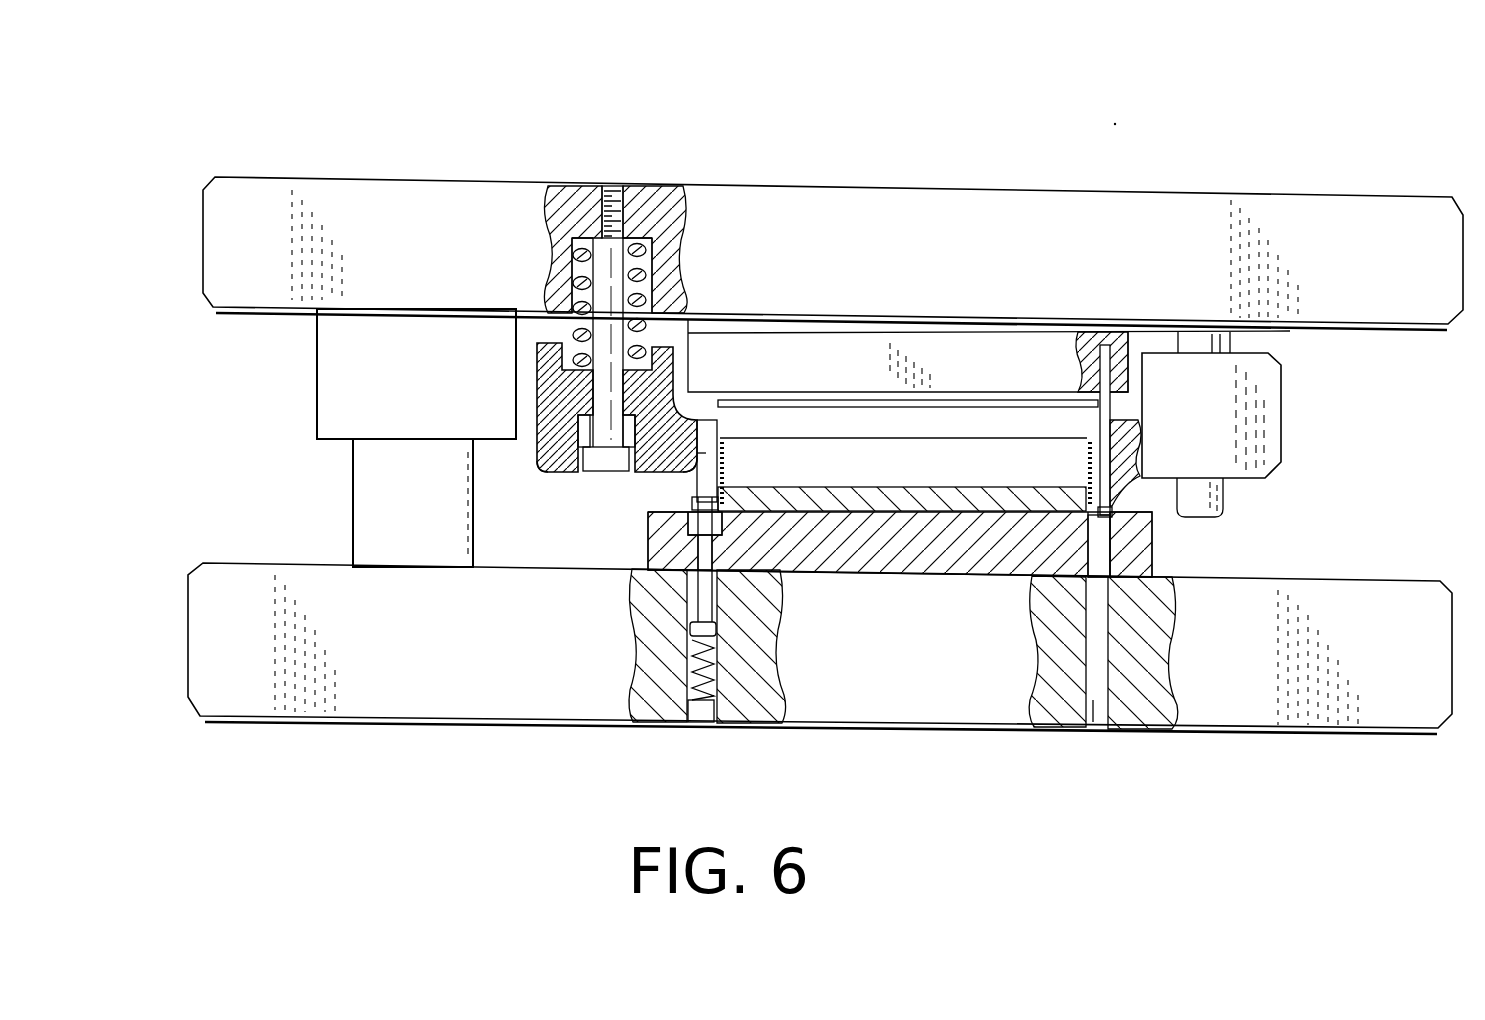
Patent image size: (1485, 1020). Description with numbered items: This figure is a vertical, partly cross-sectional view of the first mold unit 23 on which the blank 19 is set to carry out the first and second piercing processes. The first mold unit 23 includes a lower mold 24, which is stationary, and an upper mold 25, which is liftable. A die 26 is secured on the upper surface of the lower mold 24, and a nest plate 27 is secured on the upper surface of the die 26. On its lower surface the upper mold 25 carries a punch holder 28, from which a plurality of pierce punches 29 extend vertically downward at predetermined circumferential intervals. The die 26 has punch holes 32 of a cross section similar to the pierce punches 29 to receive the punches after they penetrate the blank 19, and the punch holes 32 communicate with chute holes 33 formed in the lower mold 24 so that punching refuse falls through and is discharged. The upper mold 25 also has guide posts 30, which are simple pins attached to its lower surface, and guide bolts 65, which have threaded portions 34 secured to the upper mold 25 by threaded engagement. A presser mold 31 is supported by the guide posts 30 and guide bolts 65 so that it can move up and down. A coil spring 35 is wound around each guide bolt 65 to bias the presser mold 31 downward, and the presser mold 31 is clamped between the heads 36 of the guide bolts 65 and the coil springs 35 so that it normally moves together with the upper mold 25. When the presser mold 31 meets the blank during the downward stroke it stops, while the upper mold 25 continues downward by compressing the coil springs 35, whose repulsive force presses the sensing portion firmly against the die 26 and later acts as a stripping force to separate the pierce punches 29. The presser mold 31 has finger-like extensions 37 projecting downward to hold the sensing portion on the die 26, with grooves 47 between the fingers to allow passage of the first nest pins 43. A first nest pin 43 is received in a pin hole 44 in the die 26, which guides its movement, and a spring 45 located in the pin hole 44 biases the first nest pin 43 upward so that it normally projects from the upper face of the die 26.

The blank 19 is at (727, 470).
The first mold unit 23 is at (866, 150).
The lower mold 24 is at (423, 663).
The upper mold 25 is at (427, 268).
The die 26 is at (901, 568).
The nest plate 27 is at (826, 500).
The punch holder 28 is at (838, 358).
The pierce punch 29 is at (1128, 423).
The guide post 30 is at (1220, 498).
The presser mold 31 is at (601, 425).
The punch hole 32 is at (1103, 547).
The chute hole 33 is at (1095, 724).
The threaded portion 34 is at (598, 216).
The coil spring 35 is at (657, 310).
The head 36 is at (598, 473).
The finger-like extension 37 is at (692, 428).
The first nest pin 43 is at (707, 588).
The pin hole 44 is at (693, 530).
The spring 45 is at (680, 672).
The groove 47 is at (698, 456).
The guide bolt 65 is at (545, 463).